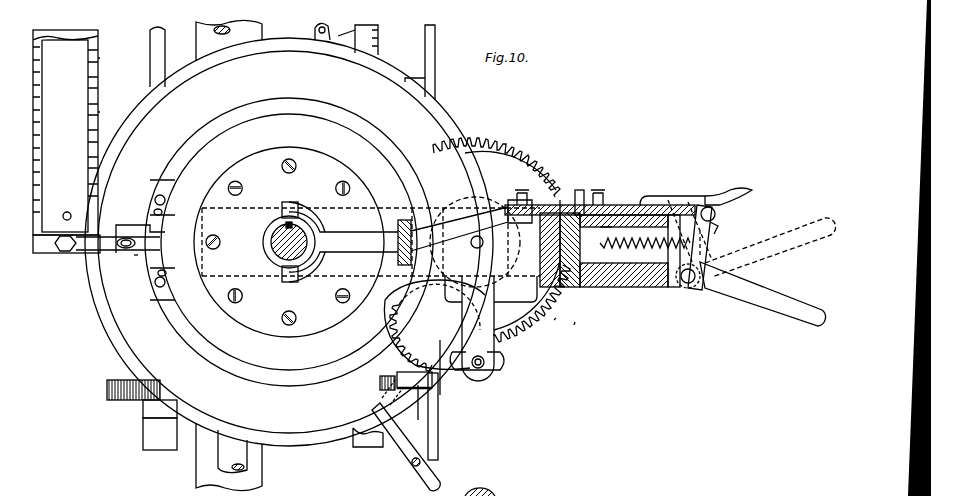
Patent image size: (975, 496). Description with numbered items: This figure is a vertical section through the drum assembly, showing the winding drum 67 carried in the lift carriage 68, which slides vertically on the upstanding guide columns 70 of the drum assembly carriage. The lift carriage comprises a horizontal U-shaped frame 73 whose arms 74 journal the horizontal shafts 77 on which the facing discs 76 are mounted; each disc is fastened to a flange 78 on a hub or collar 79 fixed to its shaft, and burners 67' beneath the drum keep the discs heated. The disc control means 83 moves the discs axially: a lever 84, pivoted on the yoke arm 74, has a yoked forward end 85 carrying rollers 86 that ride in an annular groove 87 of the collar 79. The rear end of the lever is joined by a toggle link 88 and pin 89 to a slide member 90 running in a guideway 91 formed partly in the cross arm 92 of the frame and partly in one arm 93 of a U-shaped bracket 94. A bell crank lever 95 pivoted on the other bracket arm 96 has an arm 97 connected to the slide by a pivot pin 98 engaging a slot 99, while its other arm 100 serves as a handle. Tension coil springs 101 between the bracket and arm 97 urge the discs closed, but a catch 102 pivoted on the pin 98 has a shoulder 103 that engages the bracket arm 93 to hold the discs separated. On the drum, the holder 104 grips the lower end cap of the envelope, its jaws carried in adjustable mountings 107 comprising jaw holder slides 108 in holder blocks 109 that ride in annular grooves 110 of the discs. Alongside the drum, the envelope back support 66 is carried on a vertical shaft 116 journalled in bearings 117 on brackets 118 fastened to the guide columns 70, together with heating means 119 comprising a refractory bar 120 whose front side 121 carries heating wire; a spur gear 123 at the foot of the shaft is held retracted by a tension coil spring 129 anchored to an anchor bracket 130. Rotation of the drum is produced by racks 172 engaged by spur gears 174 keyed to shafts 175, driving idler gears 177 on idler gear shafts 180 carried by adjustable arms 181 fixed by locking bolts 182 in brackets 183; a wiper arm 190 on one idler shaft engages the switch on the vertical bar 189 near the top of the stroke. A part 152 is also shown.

The envelope back support 66 is at (76, 76).
The winding drum 67 is at (289, 242).
The burners 67' is at (406, 435).
The lift carriage 68 is at (575, 322).
The guide columns 70 is at (250, 458).
The U-shaped frame 73 is at (556, 318).
The frame arms 74 is at (522, 278).
The facing discs 76 is at (100, 321).
The shafts 77 is at (273, 244).
The flanges 78 is at (257, 326).
The hubs or collars 79 is at (265, 258).
The disc control means 83 is at (702, 190).
The levers 84 is at (350, 238).
The yoked forward ends 85 is at (330, 264).
The rollers 86 is at (283, 210).
The annular grooves 87 is at (284, 226).
The toggle links 88 is at (580, 190).
The pin 89 is at (520, 190).
The slide member 90 is at (625, 204).
The guideway 91 is at (560, 200).
The cross arm 92 is at (540, 246).
The bracket arm 93 is at (614, 226).
The U-shaped bracket 94 is at (603, 288).
The bell crank lever 95 is at (706, 292).
The bracket arm 96 is at (668, 288).
The bell crank arm 97 is at (705, 240).
The pivot pin 98 is at (712, 208).
The slot 99 is at (716, 226).
The handle arm 100 is at (783, 315).
The tension coil springs 101 is at (624, 250).
The catch 102 is at (692, 194).
The shoulder 103 is at (660, 204).
The holder 104 is at (73, 255).
The adjustable mountings 107 is at (128, 222).
The jaw holder slides 108 is at (108, 252).
The holder blocks 109 is at (136, 256).
The annular grooves 110 is at (168, 316).
The shaft 116 is at (163, 56).
The bearings 117 is at (142, 442).
The brackets 118 is at (142, 412).
The heating means 119 is at (100, 58).
The refractory bar 120 is at (100, 112).
The front side 121 is at (52, 258).
The spur gear 123 is at (106, 390).
The tension coil spring 129 is at (402, 391).
The anchor bracket 130 is at (441, 395).
The bracket 152 is at (314, 29).
The racks 172 is at (356, 449).
The spur gears 174 is at (532, 152).
The shafts 175 is at (452, 204).
The idler gears 177 is at (380, 380).
The idler gear shafts 180 is at (410, 322).
The adjustable arms 181 is at (462, 372).
The locking bolts 182 is at (484, 366).
The brackets 183 is at (490, 343).
The vertical bar 189 is at (440, 432).
The wiper arm 190 is at (418, 420).